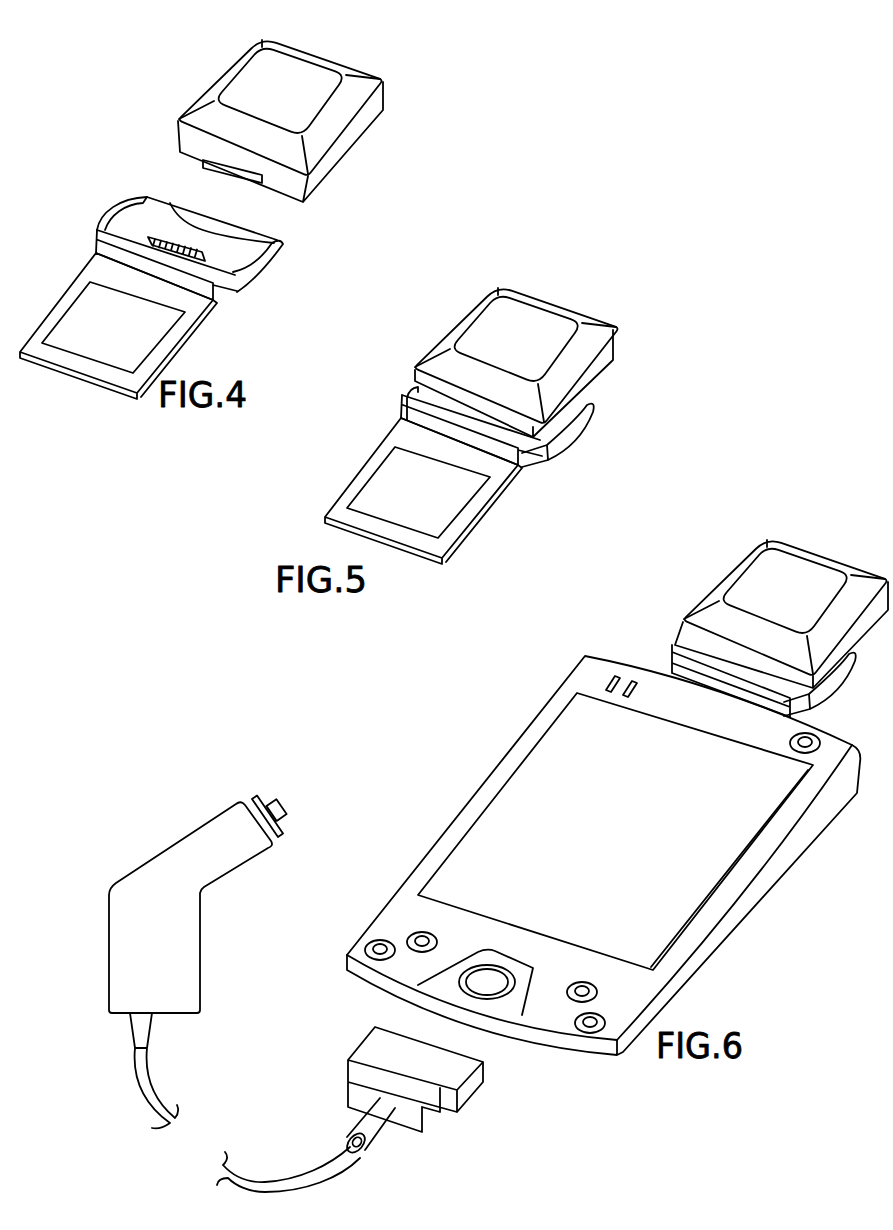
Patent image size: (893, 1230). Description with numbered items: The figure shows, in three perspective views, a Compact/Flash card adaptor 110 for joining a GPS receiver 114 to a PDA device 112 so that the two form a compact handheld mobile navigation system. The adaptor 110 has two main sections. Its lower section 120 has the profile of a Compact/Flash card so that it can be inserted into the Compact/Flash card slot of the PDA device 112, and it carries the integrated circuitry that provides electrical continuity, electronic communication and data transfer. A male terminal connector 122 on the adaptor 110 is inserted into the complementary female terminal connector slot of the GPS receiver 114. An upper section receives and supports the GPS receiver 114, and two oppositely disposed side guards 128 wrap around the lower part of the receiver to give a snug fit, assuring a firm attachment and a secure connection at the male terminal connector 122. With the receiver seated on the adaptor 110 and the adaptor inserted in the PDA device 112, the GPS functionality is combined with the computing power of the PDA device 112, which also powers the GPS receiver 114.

In FIG. 4, the GPS adaptor 110 is at (151, 251).
In FIG. 6, the GPS adaptor 110 is at (672, 657).
In FIG. 6, the PDA device 112 is at (554, 707).
In FIG. 4, the GPS receiver 114 is at (231, 58).
In FIG. 6, the GPS receiver 114 is at (728, 572).
In FIG. 4, the lower section 120 is at (152, 333).
In FIG. 4, the male terminal connector 122 is at (170, 240).
In FIG. 5, the side guards 128 is at (410, 393).